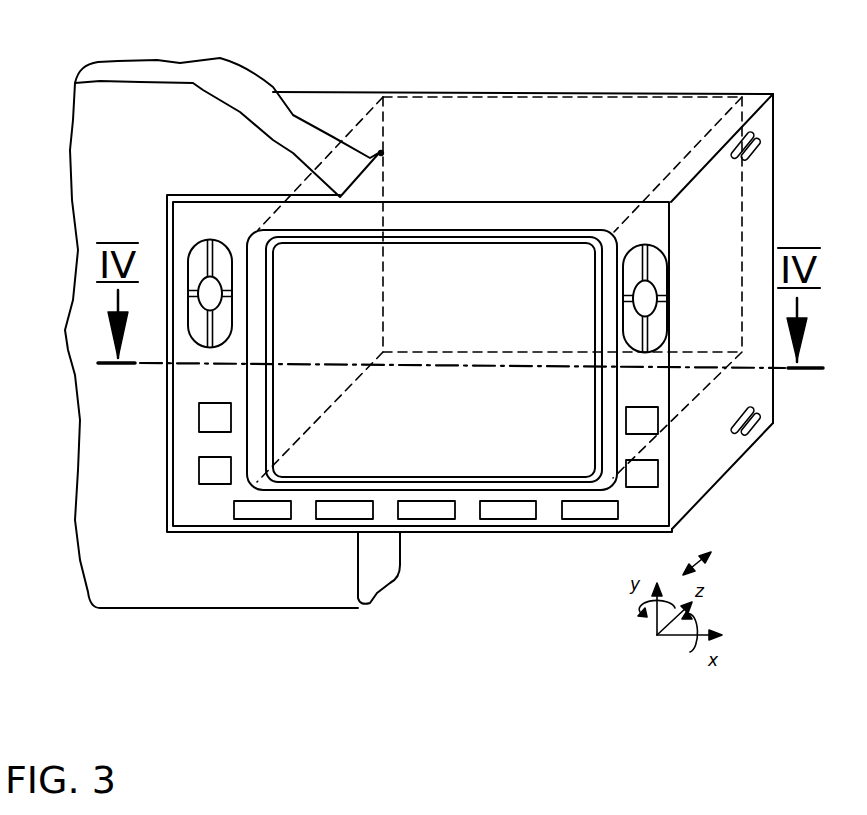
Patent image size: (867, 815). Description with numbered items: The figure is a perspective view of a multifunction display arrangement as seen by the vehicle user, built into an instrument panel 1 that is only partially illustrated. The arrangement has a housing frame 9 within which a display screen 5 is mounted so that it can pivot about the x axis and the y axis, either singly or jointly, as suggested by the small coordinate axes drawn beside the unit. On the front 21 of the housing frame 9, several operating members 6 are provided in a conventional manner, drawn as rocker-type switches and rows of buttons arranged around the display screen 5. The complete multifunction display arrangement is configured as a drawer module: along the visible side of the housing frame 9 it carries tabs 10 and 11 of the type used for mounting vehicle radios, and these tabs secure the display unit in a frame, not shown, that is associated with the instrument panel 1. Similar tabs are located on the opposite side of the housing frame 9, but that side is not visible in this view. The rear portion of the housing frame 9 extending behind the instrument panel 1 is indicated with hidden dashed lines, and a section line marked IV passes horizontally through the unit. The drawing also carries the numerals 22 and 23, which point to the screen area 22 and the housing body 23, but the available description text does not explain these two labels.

The instrument panel / dashboard 1 is at (170, 578).
The display device 5 is at (571, 448).
The rocker switch operating element 6 is at (658, 275).
The housing upper edge 9 is at (759, 108).
The lower snap hook 10 is at (743, 433).
The upper snap hook 11 is at (735, 162).
The front frame (bezel) 21 is at (657, 230).
The display screen 22 is at (412, 430).
The housing 23 is at (613, 145).